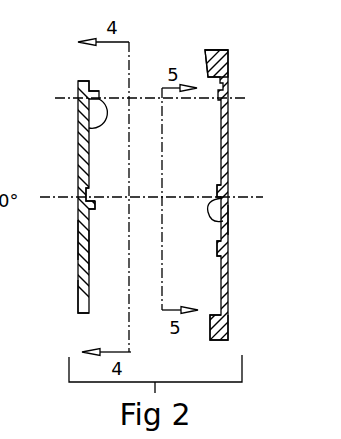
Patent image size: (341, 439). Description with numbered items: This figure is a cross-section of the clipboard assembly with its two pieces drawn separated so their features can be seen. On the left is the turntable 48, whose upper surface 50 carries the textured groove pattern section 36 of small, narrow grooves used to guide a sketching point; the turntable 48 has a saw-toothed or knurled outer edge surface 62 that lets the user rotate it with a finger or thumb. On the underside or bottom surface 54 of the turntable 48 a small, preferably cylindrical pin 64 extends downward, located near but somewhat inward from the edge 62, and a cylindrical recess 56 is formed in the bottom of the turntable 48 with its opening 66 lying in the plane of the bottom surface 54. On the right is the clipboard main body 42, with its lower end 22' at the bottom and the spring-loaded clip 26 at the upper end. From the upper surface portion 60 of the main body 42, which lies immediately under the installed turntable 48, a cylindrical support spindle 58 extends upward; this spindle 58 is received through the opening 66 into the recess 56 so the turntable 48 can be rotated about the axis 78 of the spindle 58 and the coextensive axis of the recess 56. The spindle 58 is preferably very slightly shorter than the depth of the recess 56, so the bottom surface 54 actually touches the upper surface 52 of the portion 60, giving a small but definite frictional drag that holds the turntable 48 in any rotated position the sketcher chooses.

The lower end 22' is at (243, 336).
The spring-loaded clip 26 is at (203, 49).
The textured groove pattern section 36 is at (78, 289).
The clipboard main body 42 is at (229, 63).
The turntable 48 is at (72, 155).
The upper surface of turntable 50 is at (78, 237).
The upper surface of clipboard main body 52 is at (221, 150).
The bottom surface of turntable 54 is at (89, 253).
The cylindrical recess 56 is at (86, 190).
The support spindle 58 is at (229, 228).
The upper surface portion 60 is at (222, 255).
The knurled outer edge surface 62 is at (78, 80).
The pin 64 is at (91, 130).
The opening of recess 66 is at (93, 200).
The axis of spindle 78 is at (232, 195).